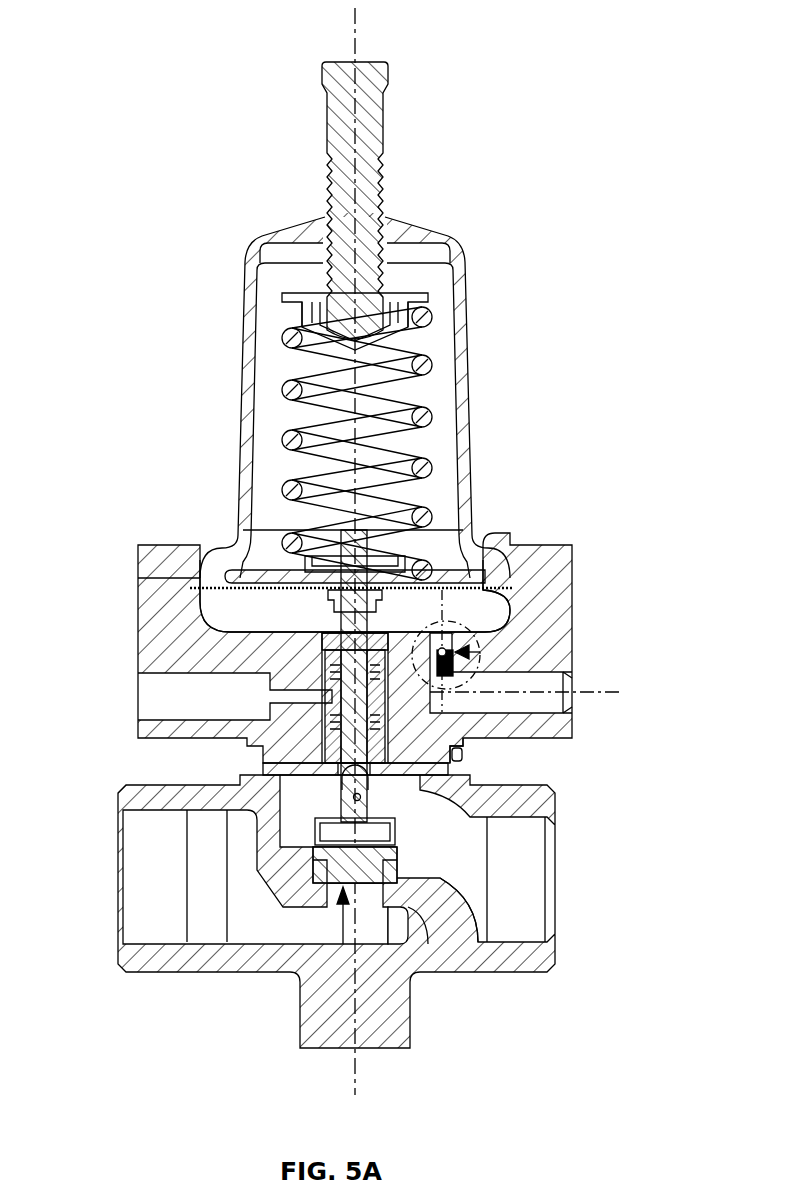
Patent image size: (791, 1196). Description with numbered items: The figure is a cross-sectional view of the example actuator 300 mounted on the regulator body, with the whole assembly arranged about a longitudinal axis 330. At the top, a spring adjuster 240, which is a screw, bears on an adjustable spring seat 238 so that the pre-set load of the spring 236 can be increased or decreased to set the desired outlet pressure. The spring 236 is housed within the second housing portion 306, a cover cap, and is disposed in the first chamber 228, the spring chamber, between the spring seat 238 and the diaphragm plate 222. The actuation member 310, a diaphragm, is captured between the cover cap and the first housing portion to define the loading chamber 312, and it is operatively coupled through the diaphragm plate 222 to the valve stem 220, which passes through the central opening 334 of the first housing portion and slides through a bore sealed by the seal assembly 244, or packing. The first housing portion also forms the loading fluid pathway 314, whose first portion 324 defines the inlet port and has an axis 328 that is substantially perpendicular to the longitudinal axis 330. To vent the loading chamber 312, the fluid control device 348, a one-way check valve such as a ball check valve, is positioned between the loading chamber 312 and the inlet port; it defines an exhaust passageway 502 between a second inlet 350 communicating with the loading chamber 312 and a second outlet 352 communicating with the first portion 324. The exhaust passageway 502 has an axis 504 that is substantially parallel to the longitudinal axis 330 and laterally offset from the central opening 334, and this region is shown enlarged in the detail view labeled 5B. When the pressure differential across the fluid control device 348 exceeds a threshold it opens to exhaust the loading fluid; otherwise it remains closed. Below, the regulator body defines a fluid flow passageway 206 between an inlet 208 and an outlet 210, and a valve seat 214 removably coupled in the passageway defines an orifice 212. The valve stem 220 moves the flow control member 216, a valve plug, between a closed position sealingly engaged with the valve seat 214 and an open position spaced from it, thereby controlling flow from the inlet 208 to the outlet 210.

The actuator 300 is at (186, 49).
The longitudinal axis 330 is at (352, 36).
The spring adjuster 240 is at (384, 140).
The adjustable spring seat 238 is at (430, 300).
The spring 236 is at (433, 368).
The second housing portion 306 is at (470, 406).
The second inlet 350 is at (352, 534).
The diaphragm plate 222 is at (248, 560).
The actuation member 310 is at (197, 548).
The loading chamber 312 is at (308, 621).
The central opening 334 is at (325, 636).
The valve stem 220 is at (327, 652).
The first chamber 228 is at (492, 565).
The axis 504 is at (470, 576).
The fluid control device 348 is at (470, 650).
The exhaust passageway 502 is at (456, 660).
The first portion 324 is at (537, 673).
The axis 328 is at (620, 692).
The loading fluid pathway 314 is at (568, 698).
The detail view reference 5B is at (560, 742).
The second outlet 352 is at (470, 742).
The seal assembly 244 is at (462, 757).
The outlet 210 is at (553, 868).
The valve seat 214 is at (445, 900).
The inlet 208 is at (117, 893).
The flow control member 216 is at (313, 850).
The fluid flow passageway 206 is at (333, 832).
The orifice 212 is at (343, 944).